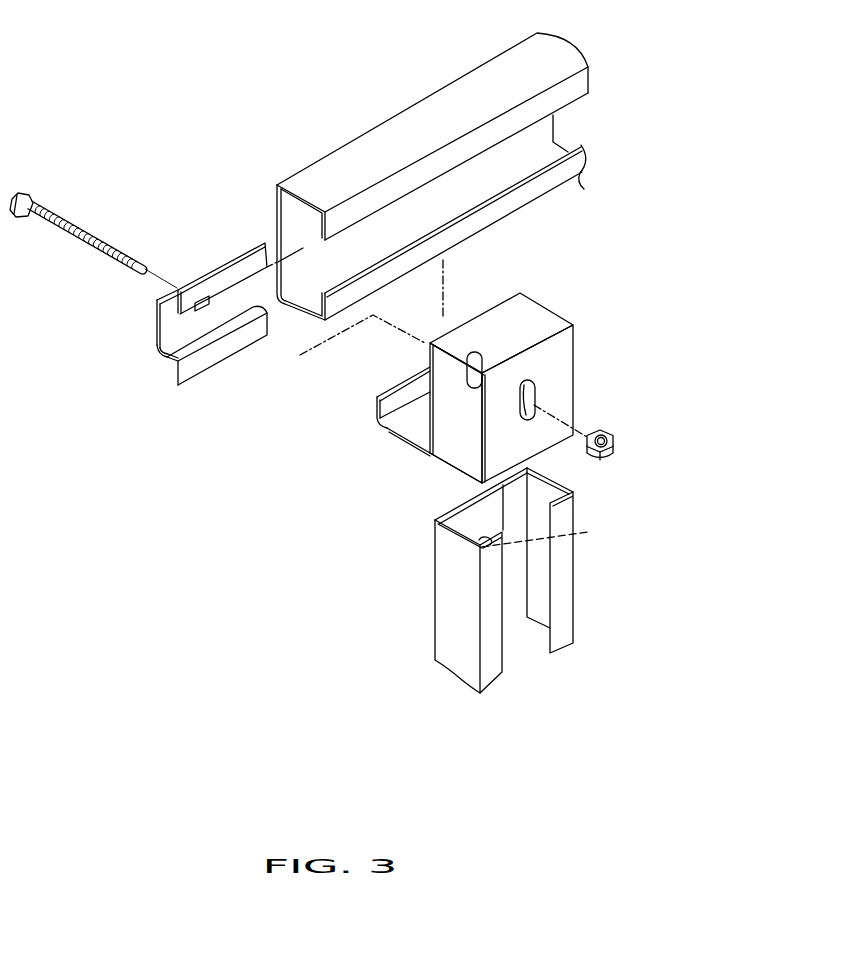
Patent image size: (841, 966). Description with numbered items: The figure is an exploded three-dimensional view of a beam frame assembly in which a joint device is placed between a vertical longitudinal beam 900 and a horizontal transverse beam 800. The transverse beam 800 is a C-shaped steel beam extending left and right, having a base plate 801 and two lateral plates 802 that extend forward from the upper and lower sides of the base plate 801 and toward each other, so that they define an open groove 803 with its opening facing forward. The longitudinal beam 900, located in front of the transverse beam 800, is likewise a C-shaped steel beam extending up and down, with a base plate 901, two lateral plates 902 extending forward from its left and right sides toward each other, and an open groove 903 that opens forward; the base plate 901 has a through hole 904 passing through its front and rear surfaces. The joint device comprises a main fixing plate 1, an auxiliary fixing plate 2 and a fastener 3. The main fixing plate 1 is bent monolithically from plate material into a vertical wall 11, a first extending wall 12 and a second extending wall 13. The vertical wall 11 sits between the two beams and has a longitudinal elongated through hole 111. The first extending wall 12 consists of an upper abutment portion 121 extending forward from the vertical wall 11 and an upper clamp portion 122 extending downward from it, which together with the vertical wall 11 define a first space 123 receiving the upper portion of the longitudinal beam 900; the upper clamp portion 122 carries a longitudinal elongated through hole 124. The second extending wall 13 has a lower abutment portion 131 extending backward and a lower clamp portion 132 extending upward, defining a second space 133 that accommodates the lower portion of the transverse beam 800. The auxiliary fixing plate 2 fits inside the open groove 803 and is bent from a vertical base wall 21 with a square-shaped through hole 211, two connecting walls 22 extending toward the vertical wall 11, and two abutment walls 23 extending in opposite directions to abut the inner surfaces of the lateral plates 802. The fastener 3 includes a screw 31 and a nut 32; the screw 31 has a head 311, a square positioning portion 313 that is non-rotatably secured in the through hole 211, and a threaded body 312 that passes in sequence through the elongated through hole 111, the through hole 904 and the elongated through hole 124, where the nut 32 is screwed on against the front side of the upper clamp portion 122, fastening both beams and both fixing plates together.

The main fixing plate 1 is at (475, 376).
The vertical wall 11 is at (411, 385).
The longitudinal elongated through hole 111 is at (470, 357).
The first extending wall 12 is at (520, 389).
The upper abutment portion 121 is at (550, 316).
The upper clamp portion 122 is at (555, 397).
The first space 123 is at (470, 455).
The longitudinal elongated through hole 124 is at (537, 388).
The second extending wall 13 is at (360, 400).
The lower abutment portion 131 is at (403, 432).
The lower clamp portion 132 is at (384, 409).
The second space 133 is at (417, 408).
The auxiliary fixing plate 2 is at (169, 332).
The vertical base wall 21 is at (180, 332).
The square-shaped through hole 211 is at (210, 313).
The connecting walls 22 is at (177, 352).
The abutment walls 23 is at (223, 283).
The fastener 3 is at (91, 198).
The screw 31 is at (76, 191).
The head 311 is at (22, 196).
The threaded body 312 is at (70, 226).
The positioning portion 313 is at (17, 220).
The nut 32 is at (606, 428).
The transverse beam 800 is at (411, 176).
The base plate 801 is at (277, 221).
The lateral plates 802 is at (360, 288).
The open groove 803 is at (422, 203).
The longitudinal beam 900 is at (473, 584).
The base plate 901 is at (512, 612).
The lateral plates 902 is at (453, 632).
The open groove 903 is at (533, 568).
The through hole 904 is at (588, 532).